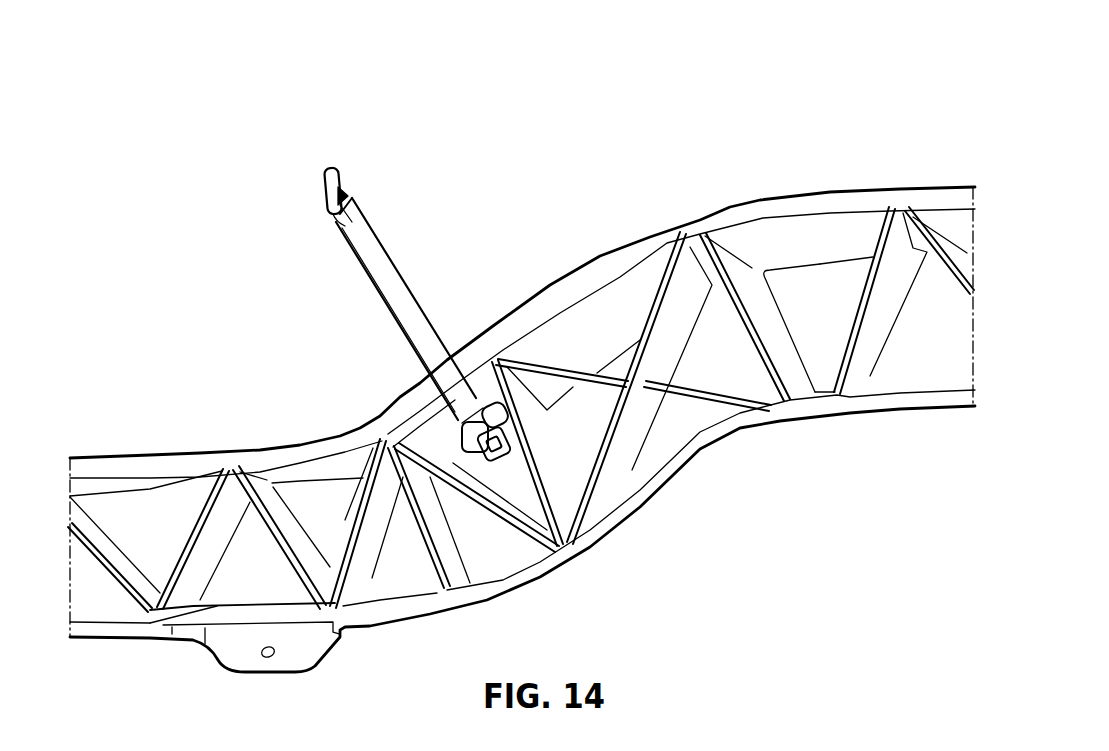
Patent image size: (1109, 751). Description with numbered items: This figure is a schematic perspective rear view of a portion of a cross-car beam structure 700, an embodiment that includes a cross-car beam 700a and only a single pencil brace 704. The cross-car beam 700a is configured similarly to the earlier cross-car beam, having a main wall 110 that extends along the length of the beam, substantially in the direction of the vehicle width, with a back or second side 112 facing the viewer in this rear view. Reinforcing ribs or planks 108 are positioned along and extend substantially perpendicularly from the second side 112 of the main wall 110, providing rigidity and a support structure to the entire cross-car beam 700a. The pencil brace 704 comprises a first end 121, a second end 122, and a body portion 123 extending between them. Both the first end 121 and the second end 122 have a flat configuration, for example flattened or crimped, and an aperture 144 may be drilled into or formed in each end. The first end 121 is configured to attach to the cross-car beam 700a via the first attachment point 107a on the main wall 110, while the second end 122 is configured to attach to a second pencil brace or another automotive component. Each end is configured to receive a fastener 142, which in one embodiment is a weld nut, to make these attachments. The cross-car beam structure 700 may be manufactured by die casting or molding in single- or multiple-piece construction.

The cross-car beam structure 700 is at (618, 193).
The cross-car beam 700a is at (920, 415).
The reinforcing ribs or planks 108 is at (710, 400).
The main wall 110 is at (783, 270).
The second side 112 is at (815, 277).
The pencil brace 704 is at (441, 373).
The body portion 123 is at (383, 245).
The second end 122 is at (341, 178).
The aperture 144 is at (340, 197).
The fastener 142 is at (500, 427).
The first end 121 is at (473, 437).
The first attachment point 107a is at (462, 428).